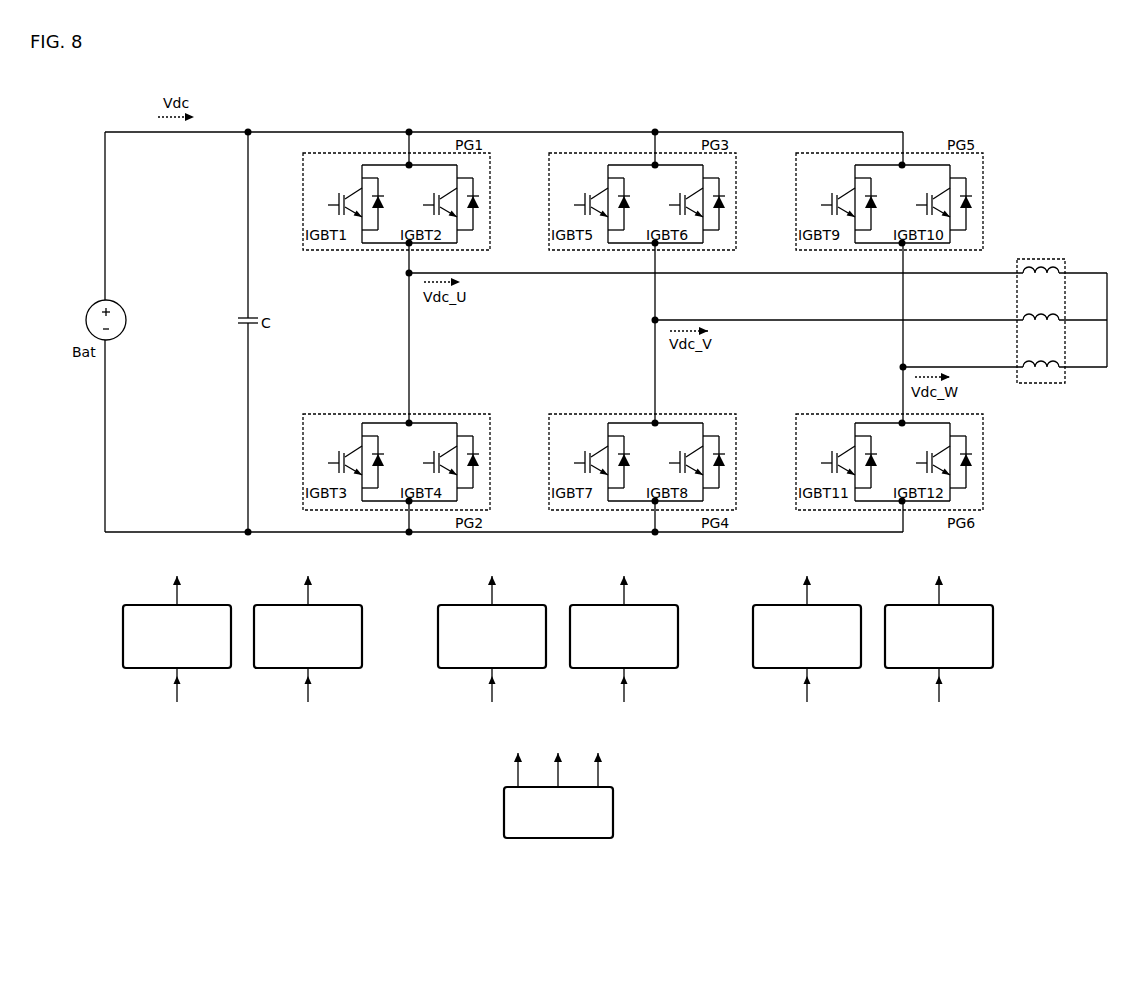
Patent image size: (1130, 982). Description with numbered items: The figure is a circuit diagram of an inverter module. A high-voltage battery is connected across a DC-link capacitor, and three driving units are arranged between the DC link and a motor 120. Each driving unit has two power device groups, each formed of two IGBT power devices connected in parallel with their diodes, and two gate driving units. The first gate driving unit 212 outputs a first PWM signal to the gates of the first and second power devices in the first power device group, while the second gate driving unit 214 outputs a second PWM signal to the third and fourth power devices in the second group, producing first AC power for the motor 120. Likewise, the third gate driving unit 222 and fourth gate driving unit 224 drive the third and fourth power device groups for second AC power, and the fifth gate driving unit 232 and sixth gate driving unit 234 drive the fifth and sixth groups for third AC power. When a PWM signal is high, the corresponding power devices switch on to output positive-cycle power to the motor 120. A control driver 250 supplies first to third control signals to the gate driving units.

The motor 120 is at (1042, 256).
The first gate driving unit 212 is at (192, 605).
The second gate driving unit 214 is at (323, 605).
The third gate driving unit 222 is at (507, 605).
The fourth gate driving unit 224 is at (639, 605).
The fifth gate driving unit 232 is at (822, 605).
The sixth gate driving unit 234 is at (954, 605).
The control driver 250 is at (613, 787).